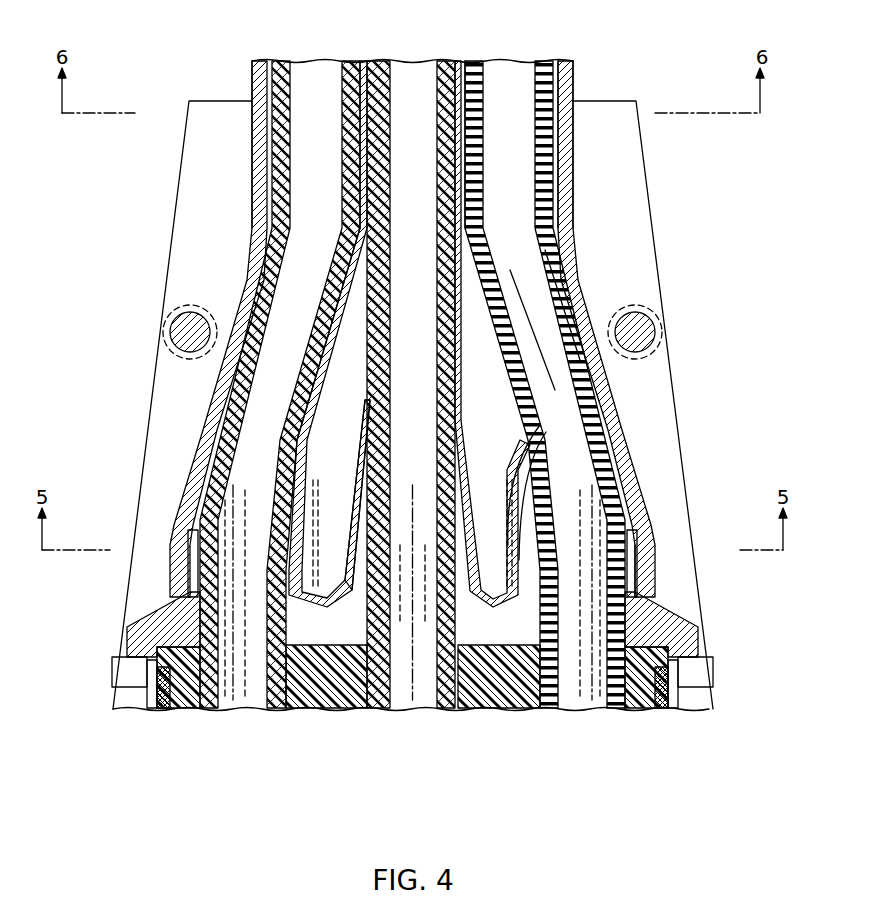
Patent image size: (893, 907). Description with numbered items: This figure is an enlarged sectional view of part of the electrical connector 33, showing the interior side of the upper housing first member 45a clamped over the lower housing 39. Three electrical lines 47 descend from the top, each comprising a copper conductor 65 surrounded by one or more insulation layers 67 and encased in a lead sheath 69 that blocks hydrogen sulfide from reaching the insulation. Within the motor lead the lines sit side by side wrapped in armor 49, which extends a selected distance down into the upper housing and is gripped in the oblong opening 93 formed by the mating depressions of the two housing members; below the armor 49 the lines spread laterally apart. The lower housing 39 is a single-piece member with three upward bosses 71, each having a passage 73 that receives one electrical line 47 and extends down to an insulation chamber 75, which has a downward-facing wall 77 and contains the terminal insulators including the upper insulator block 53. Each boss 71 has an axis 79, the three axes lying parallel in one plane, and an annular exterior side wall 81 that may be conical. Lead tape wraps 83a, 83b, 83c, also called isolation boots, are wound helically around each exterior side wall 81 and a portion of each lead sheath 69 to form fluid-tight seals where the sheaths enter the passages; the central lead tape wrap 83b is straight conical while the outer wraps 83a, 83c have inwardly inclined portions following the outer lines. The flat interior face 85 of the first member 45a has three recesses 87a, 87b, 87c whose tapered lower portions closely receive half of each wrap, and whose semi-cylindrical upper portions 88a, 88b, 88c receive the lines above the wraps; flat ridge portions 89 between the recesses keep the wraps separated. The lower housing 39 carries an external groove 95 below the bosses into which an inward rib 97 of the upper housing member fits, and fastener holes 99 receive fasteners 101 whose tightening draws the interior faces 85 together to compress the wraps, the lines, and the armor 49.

The connector 33 is at (191, 90).
The electrical line 47 is at (390, 72).
The armor 49 is at (565, 98).
The lead sheath 69 is at (548, 113).
The oblong opening 93 is at (258, 150).
The ridge portion 89 is at (357, 305).
The recess upper portion 88a is at (330, 292).
The recess upper portion 88b is at (497, 303).
The recess upper portion 88c is at (478, 248).
The upper housing first member 45a is at (666, 218).
The insulation layer 67 is at (560, 285).
The copper conductor 65 is at (535, 310).
The interior face 85 is at (655, 292).
The fastener 101 is at (184, 324).
The fastener hole 99 is at (650, 340).
The recess 87a is at (215, 480).
The recess 87b is at (465, 455).
The recess 87c is at (652, 575).
The lead tape wrap 83a is at (195, 425).
The lead tape wrap 83b is at (355, 500).
The lead tape wrap 83c is at (635, 500).
The exterior side wall 81 is at (540, 485).
The axis 79 is at (585, 497).
The boss 71 is at (635, 540).
The lower housing 39 is at (152, 625).
The rib 97 is at (150, 645).
The passage 73 is at (682, 650).
The groove 95 is at (150, 677).
The insulation chamber 75 is at (168, 708).
The insulation chamber wall 77 is at (308, 708).
The upper insulator block 53 is at (487, 692).